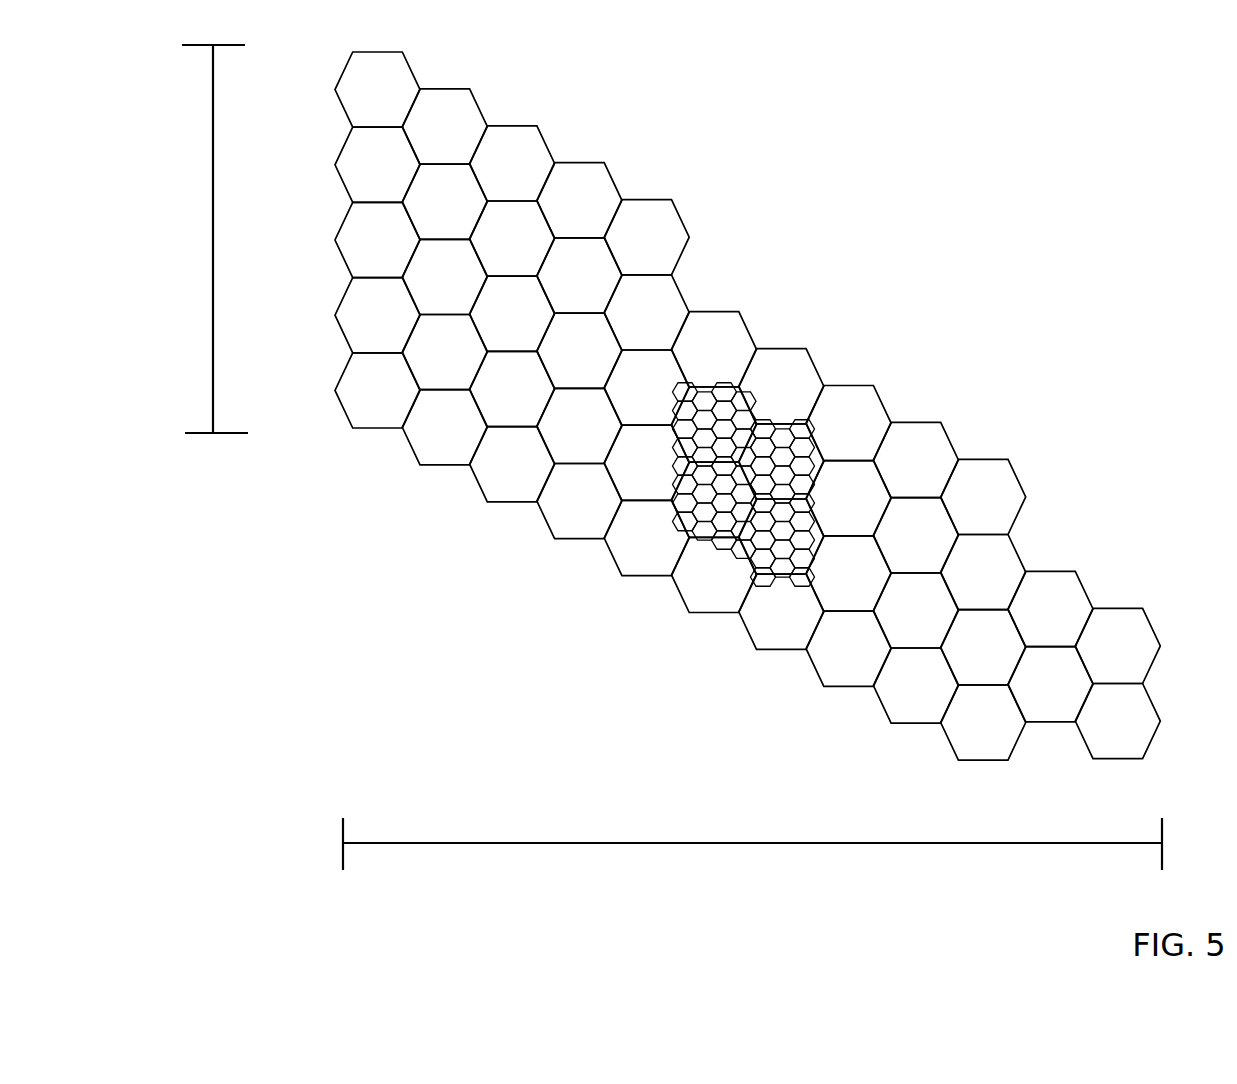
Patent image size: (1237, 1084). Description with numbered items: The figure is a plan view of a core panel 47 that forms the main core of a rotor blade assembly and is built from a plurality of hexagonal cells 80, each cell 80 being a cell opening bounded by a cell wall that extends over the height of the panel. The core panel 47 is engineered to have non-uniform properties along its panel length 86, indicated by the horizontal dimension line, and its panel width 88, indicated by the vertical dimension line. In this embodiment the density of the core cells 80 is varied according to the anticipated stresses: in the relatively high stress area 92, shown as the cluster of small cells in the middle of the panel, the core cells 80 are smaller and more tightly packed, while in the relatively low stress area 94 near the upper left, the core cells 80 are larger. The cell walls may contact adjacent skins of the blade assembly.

The core panel 47 is at (747, 400).
The cell 80 is at (580, 508).
The panel length 86 is at (752, 840).
The panel width 88 is at (215, 239).
The relatively high stress area 92 is at (728, 412).
The relatively low stress area 94 is at (497, 148).